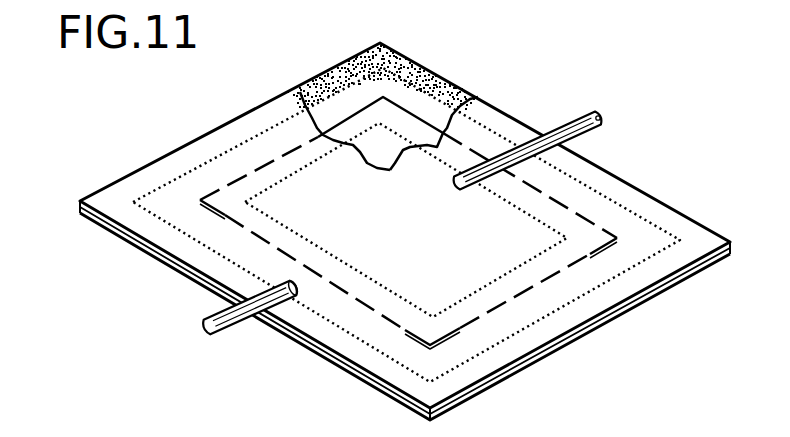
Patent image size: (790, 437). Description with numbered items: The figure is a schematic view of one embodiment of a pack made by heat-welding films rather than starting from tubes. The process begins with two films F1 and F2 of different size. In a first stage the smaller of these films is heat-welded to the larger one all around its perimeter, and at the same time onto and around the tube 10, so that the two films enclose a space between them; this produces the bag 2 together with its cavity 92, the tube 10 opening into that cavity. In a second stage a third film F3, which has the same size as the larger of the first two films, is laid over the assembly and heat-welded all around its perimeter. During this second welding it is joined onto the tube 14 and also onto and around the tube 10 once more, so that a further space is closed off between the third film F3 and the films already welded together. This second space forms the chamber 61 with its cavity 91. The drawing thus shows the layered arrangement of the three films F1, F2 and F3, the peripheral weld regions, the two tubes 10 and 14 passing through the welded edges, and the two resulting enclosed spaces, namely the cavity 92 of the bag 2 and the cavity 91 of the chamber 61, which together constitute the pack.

The bag 2 is at (480, 288).
The tube 10 is at (570, 112).
The tube 14 is at (206, 321).
The chamber 61 is at (587, 293).
The cavity 91 is at (444, 113).
The cavity 92 is at (372, 135).
The film F1 is at (429, 62).
The film F2 is at (361, 96).
The film F3 is at (667, 191).